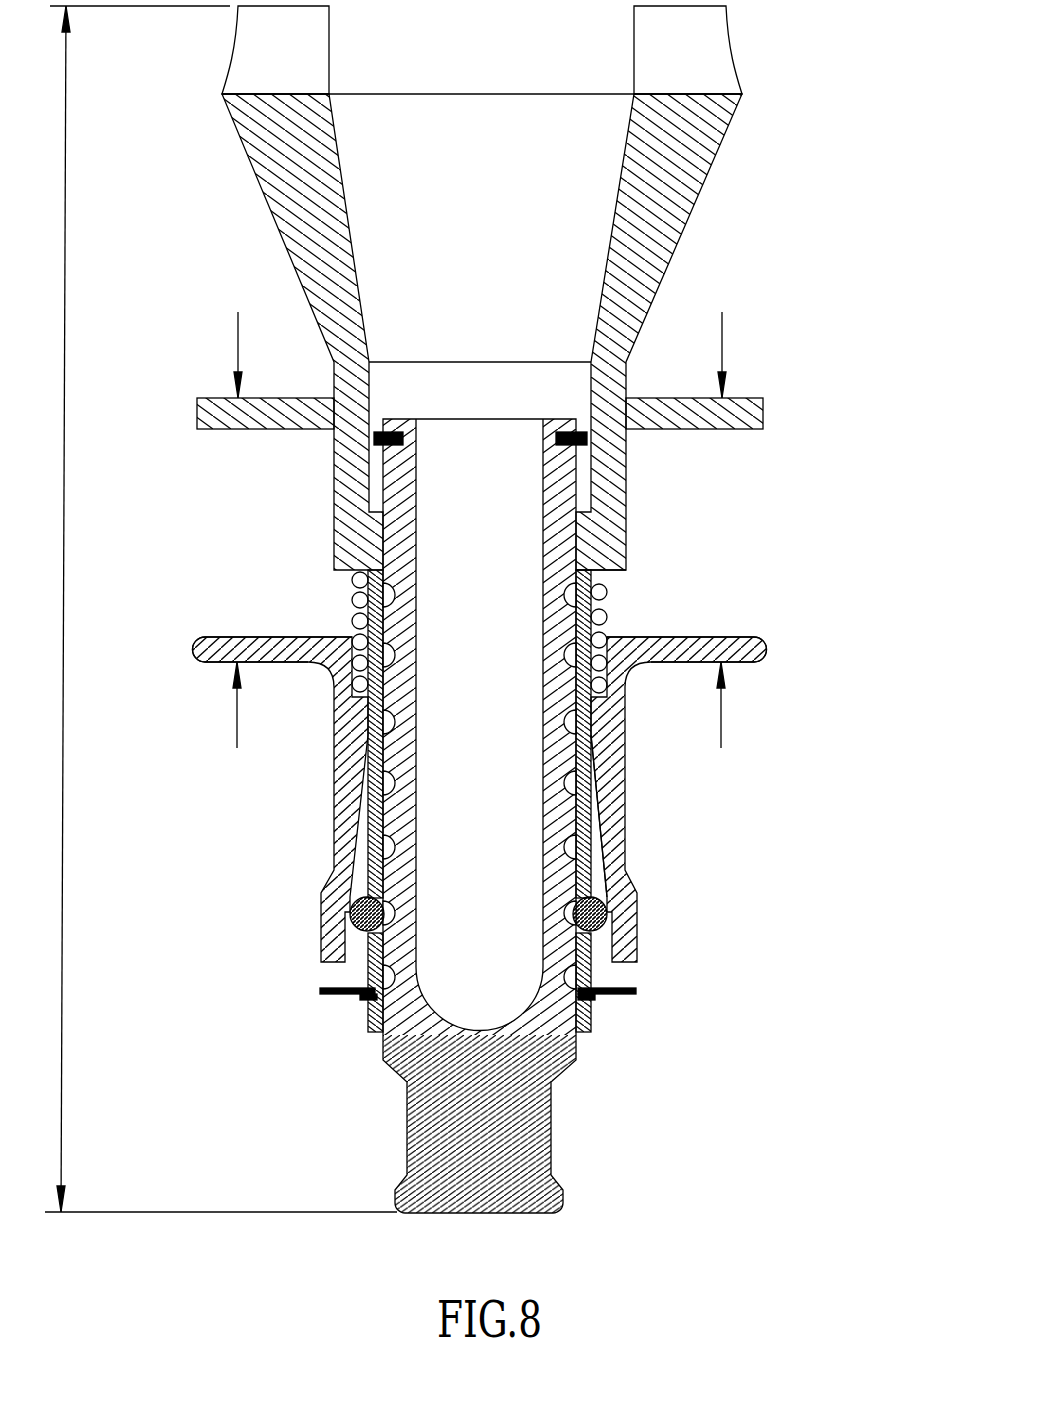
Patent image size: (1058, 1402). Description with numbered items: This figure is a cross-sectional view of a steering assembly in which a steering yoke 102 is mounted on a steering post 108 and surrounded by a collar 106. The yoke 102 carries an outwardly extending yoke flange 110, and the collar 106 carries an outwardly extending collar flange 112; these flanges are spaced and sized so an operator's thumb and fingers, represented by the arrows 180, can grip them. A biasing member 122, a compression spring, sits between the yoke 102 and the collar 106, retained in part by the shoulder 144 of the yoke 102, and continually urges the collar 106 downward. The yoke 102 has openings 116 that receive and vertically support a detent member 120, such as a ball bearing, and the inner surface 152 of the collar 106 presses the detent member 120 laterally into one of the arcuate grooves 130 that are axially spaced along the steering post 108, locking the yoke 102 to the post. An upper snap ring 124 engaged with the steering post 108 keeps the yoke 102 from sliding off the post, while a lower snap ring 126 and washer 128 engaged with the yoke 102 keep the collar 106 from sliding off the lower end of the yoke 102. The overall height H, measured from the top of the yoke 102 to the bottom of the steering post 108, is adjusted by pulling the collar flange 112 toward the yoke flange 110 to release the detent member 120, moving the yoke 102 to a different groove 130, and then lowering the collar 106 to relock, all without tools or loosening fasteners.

The steering yoke 102 is at (772, 171).
The collar 106 is at (294, 816).
The steering post 108 is at (590, 1126).
The yoke flange 110 is at (753, 398).
The collar flange 112 is at (748, 637).
The openings 116 is at (637, 932).
The detent member 120 is at (365, 933).
The biasing member 122 is at (326, 592).
The upper snap ring 124 is at (582, 430).
The lower snap ring 126 is at (594, 1001).
The washer 128 is at (637, 991).
The arcuate grooves 130 is at (578, 720).
The shoulder 144 is at (612, 572).
The inner surface 152 is at (606, 894).
The arrows 180 is at (237, 347).
The overall height H is at (218, 609).